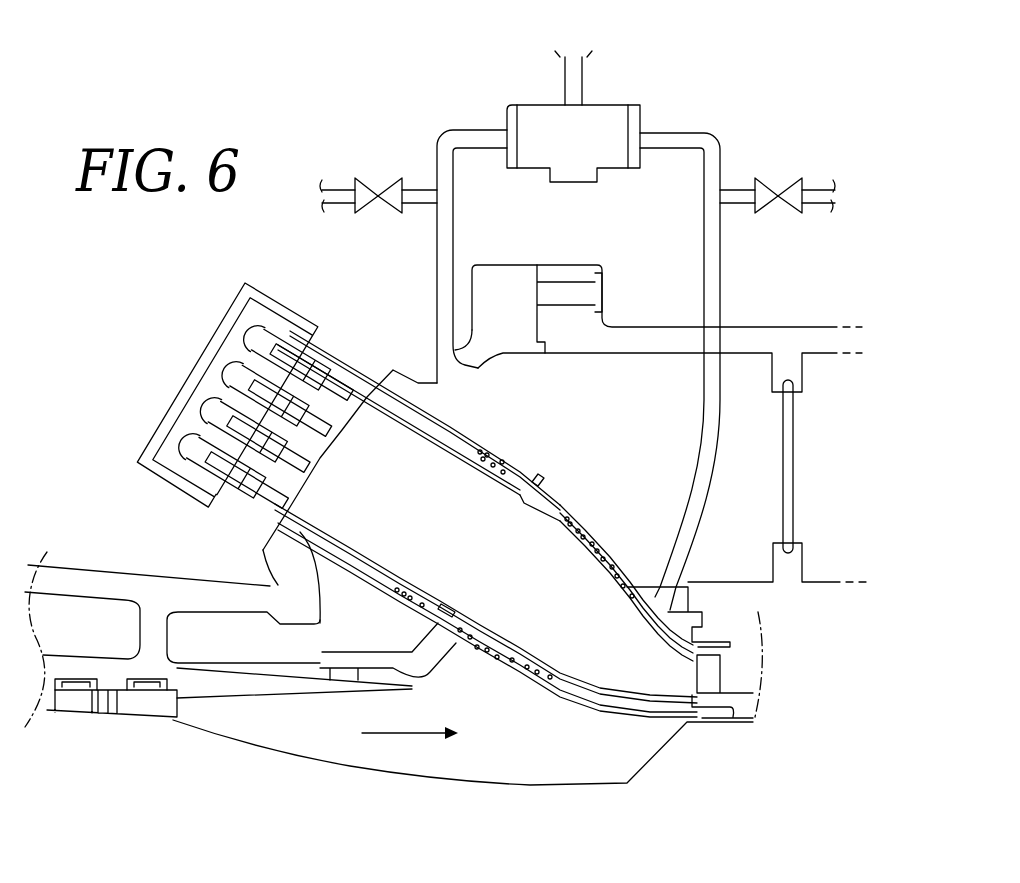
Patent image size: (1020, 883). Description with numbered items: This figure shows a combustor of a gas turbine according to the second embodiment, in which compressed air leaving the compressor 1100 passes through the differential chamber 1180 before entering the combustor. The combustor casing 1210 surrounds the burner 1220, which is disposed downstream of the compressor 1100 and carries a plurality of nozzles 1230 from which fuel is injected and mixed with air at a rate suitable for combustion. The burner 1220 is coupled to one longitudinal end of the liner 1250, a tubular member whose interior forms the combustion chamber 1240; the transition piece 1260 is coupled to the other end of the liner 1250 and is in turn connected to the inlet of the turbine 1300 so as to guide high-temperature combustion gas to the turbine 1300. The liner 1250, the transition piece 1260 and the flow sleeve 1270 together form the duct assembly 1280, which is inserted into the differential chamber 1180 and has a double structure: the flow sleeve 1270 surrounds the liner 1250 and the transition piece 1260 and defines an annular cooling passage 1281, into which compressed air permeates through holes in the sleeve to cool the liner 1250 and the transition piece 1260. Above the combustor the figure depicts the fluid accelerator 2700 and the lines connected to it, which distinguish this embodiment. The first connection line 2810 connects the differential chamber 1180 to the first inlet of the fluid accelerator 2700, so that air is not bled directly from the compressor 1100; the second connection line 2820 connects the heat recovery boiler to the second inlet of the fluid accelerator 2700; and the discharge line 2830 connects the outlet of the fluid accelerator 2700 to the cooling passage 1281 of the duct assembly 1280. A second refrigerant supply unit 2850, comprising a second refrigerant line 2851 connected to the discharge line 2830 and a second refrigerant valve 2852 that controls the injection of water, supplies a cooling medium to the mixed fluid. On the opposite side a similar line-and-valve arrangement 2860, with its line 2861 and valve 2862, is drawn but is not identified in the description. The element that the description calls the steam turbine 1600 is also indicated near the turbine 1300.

The compressor 1100 is at (72, 735).
The differential chamber 1180 is at (742, 480).
The combustor casing 1210 is at (647, 315).
The burner 1220 is at (223, 411).
The nozzle 1230 is at (208, 362).
The combustion chamber 1240 is at (362, 473).
The liner 1250 is at (486, 452).
The transition piece 1260 is at (560, 509).
The flow sleeve 1270 is at (539, 474).
The duct assembly 1280 is at (611, 516).
The cooling passage 1281 is at (455, 438).
The main turbine 1300 is at (736, 675).
The steam turbine 1600 is at (634, 587).
The fluid accelerator 2700 is at (543, 95).
The first connection line 2810 is at (478, 137).
The second connection line 2820 is at (575, 75).
The discharge line 2830 is at (712, 258).
The second refrigerant supply unit 2850 is at (363, 140).
The second refrigerant line 2851 is at (335, 193).
The second refrigerant valve 2852 is at (372, 178).
The second valve assembly 2860 is at (795, 140).
The second branch pipe 2861 is at (818, 193).
The second valve 2862 is at (784, 178).